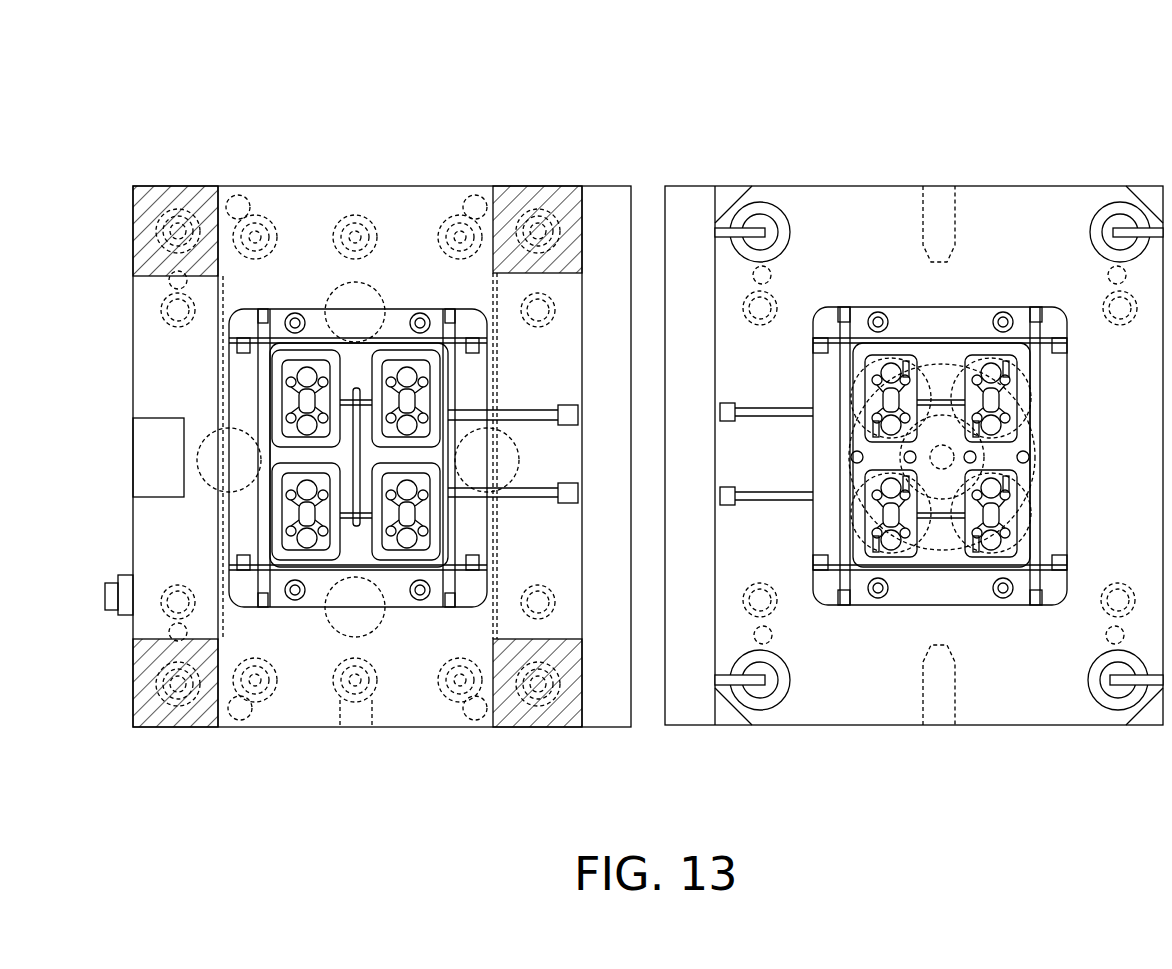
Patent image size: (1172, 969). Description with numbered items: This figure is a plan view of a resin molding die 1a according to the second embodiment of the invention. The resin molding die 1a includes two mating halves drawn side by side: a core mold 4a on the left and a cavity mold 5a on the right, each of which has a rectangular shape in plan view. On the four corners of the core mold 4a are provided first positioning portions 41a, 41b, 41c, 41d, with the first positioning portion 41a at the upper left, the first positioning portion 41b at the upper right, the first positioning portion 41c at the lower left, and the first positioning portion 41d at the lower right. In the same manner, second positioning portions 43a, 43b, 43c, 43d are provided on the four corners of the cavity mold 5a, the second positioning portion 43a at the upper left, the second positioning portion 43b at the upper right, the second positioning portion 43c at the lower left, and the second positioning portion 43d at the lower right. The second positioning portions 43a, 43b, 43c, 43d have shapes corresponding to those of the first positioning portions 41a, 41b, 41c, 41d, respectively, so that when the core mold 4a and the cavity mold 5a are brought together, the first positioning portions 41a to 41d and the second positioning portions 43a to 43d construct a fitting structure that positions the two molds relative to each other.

The resin molding die 1a is at (647, 92).
The core mold 4a is at (393, 312).
The cavity mold 5a is at (960, 318).
The first positioning portion 41a is at (240, 322).
The first positioning portion 41b is at (460, 322).
The first positioning portion 41c is at (250, 595).
The first positioning portion 41d is at (462, 595).
The second positioning portion 43a is at (823, 320).
The second positioning portion 43b is at (1053, 320).
The second positioning portion 43c is at (823, 605).
The second positioning portion 43d is at (1048, 605).